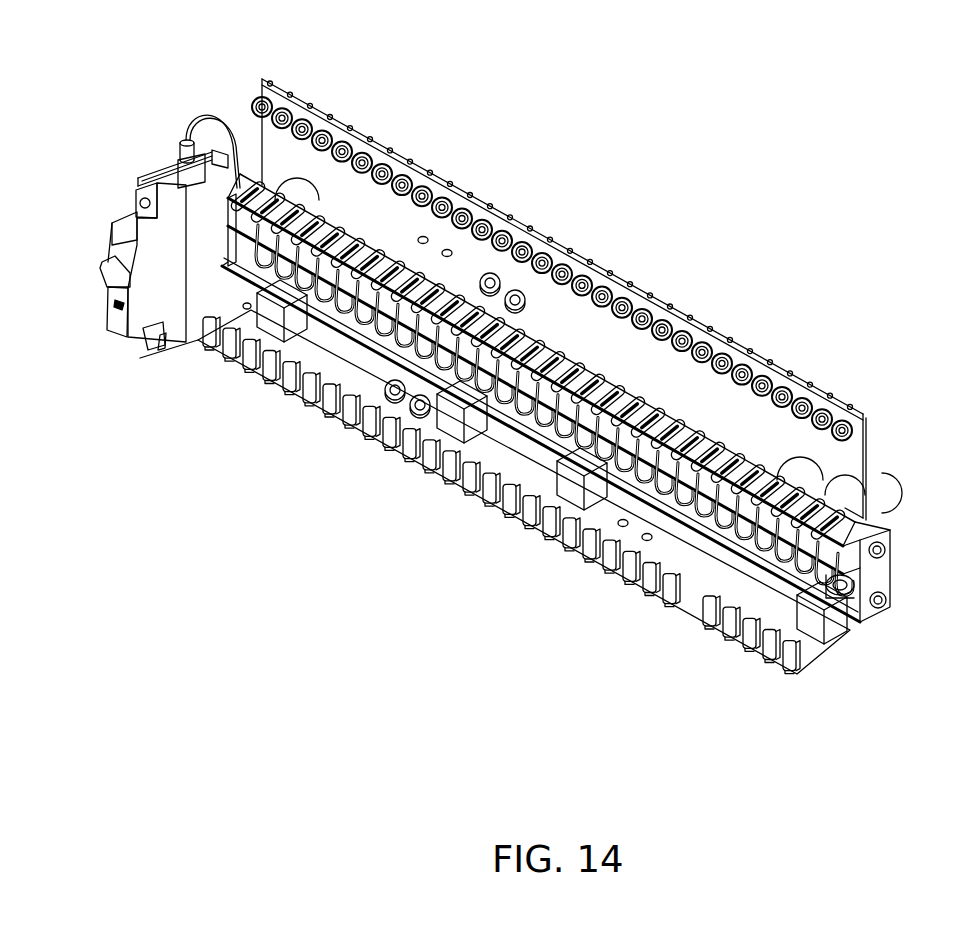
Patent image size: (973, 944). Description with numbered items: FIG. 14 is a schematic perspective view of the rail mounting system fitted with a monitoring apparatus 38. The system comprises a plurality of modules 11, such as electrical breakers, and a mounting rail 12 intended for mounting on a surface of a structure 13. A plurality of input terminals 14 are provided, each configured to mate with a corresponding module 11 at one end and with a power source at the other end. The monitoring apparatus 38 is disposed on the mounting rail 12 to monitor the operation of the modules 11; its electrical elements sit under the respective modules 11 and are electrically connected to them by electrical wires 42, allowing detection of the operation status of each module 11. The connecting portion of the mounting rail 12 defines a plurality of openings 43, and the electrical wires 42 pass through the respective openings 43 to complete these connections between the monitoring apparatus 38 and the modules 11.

The module 11 is at (165, 278).
The mounting rail 12 is at (593, 410).
The structure 13 is at (643, 363).
The input terminal 14 is at (797, 648).
The monitoring apparatus 38 is at (840, 605).
The electrical wire 42 is at (205, 122).
The opening 43 is at (330, 218).